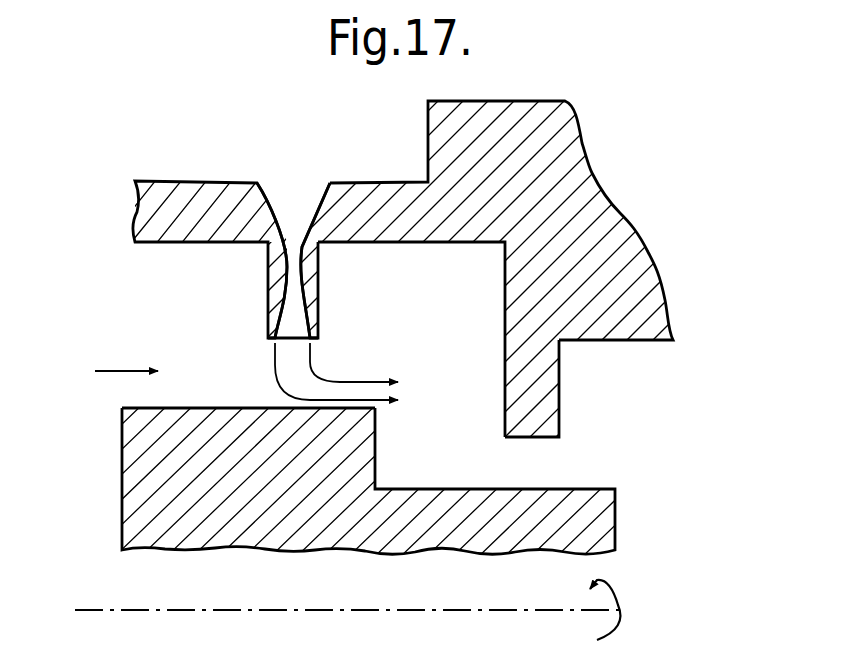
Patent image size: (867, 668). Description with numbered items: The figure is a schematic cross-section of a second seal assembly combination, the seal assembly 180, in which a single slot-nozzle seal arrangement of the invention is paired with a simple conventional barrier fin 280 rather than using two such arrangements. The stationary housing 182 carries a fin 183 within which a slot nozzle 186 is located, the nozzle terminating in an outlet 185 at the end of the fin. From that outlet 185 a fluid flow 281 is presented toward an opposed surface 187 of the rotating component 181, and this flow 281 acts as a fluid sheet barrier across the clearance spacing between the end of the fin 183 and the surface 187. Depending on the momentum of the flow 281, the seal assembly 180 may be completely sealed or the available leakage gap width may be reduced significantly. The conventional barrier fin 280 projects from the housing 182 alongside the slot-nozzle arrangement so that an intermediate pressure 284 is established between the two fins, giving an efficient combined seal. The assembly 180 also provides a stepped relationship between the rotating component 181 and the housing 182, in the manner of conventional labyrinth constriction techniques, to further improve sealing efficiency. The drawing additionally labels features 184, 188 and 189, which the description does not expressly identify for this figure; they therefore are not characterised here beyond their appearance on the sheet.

The seal assembly 180 is at (712, 290).
The rotating component 181 is at (160, 507).
The housing 182 is at (642, 260).
The fin 183 is at (275, 278).
The inlet flow arrow 184 is at (120, 373).
The outlet 185 is at (292, 338).
The slot nozzle 186 is at (288, 195).
The opposed surface 187 is at (233, 408).
The upstream chamber 188 is at (152, 286).
The downstream chamber 189 is at (728, 404).
The barrier fin 280 is at (535, 390).
The fluid flow 281 is at (388, 390).
The intermediate pressure 284 is at (435, 285).